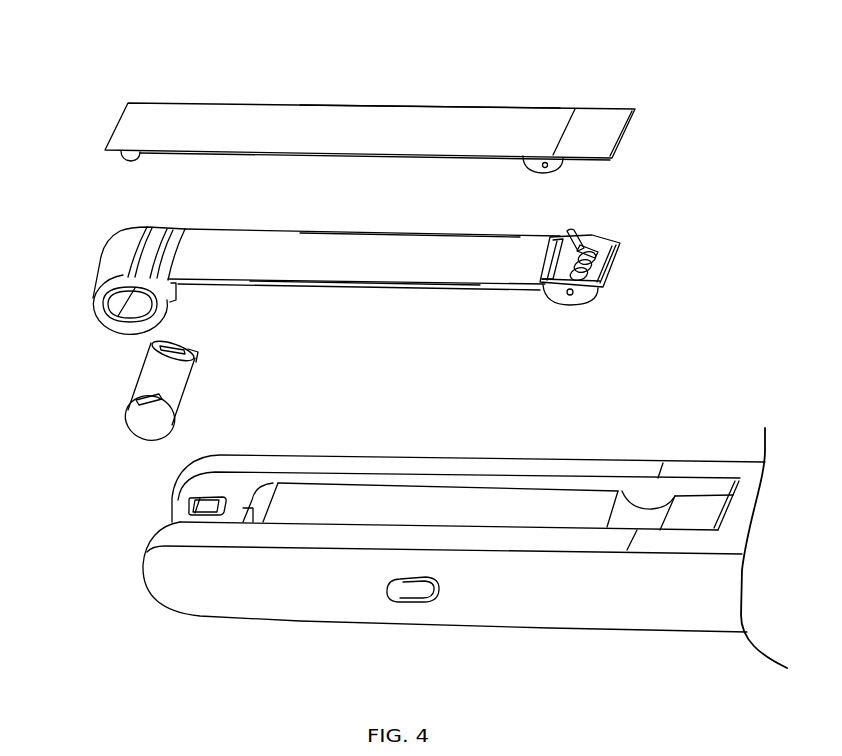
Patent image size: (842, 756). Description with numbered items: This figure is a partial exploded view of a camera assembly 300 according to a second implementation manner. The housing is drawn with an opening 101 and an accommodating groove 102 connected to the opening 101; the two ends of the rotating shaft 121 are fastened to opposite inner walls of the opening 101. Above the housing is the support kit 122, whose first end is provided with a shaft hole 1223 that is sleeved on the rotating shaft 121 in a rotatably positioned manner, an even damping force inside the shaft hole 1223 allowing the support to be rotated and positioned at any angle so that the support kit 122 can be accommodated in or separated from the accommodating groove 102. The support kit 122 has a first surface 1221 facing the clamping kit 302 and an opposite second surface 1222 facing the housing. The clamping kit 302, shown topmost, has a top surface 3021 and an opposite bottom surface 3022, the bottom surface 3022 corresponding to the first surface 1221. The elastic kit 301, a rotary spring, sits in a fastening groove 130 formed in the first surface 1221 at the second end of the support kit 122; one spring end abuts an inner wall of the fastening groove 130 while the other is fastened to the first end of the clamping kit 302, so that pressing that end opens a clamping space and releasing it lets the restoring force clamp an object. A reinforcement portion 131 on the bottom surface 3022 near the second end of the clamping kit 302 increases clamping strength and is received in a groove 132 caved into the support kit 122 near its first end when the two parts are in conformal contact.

The camera assembly 300 is at (382, 50).
The clamping kit 302 is at (357, 100).
The top surface 3021 is at (423, 115).
The bottom surface 3022 is at (480, 160).
The reinforcement portion 131 is at (125, 160).
The support kit 122 is at (110, 249).
The groove 132 is at (165, 232).
The shaft hole 1223 is at (113, 320).
The second surface 1222 is at (377, 286).
The first surface 1221 is at (425, 258).
The elastic kit 301 is at (596, 245).
The fastening groove 130 is at (560, 262).
The rotating shaft 121 is at (158, 383).
The opening 101 is at (170, 518).
The accommodating groove 102 is at (385, 508).